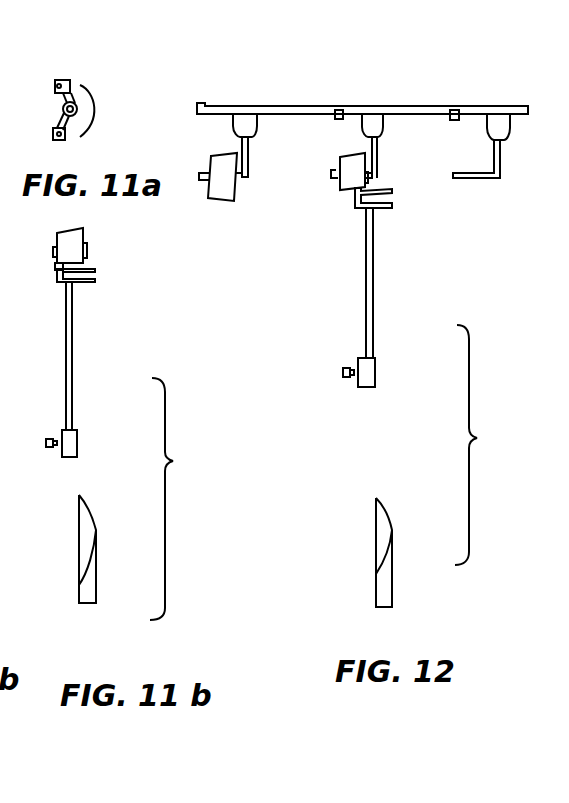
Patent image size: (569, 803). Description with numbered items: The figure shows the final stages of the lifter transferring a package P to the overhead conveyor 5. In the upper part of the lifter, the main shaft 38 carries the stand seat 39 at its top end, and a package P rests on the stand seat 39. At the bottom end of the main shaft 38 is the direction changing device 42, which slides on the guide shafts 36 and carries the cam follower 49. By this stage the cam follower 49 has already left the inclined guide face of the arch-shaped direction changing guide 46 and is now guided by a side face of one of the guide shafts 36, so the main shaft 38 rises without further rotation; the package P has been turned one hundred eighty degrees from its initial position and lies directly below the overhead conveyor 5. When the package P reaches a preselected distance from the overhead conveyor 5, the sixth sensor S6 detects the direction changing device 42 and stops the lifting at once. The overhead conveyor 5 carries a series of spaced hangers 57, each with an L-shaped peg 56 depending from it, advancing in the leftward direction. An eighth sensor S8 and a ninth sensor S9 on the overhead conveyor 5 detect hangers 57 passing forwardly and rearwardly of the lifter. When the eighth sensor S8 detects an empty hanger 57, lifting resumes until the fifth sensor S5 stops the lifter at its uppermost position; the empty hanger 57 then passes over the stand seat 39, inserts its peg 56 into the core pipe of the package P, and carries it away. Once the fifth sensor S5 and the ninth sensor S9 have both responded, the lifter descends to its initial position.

In FIG. 12, the overhead conveyor 5 is at (404, 104).
In FIG. 11A, the guide shafts 36 is at (55, 88).
In FIG. 11B, the main shaft 38 is at (66, 355).
In FIG. 12, the main shaft 38 is at (369, 283).
In FIG. 11B, the stand seat 39 is at (58, 278).
In FIG. 12, the stand seat 39 is at (388, 210).
In FIG. 11B, the direction changing device 42 is at (72, 440).
In FIG. 12, the direction changing device 42 is at (375, 373).
In FIG. 11A, the direction changing guide 46 is at (100, 101).
In FIG. 11B, the direction changing guide 46 is at (98, 510).
In FIG. 12, the direction changing guide 46 is at (396, 534).
In FIG. 11A, the cam follower 49 is at (66, 80).
In FIG. 12, the L-shaped peg 56 is at (465, 179).
In FIG. 12, the hanger 57 is at (506, 143).
In FIG. 11B, the package P is at (65, 242).
In FIG. 12, the package P is at (217, 201).
In FIG. 12, the fifth sensor S5 is at (343, 372).
In FIG. 11B, the sixth sensor S6 is at (46, 444).
In FIG. 12, the eighth sensor S8 is at (454, 121).
In FIG. 12, the ninth sensor S9 is at (338, 120).